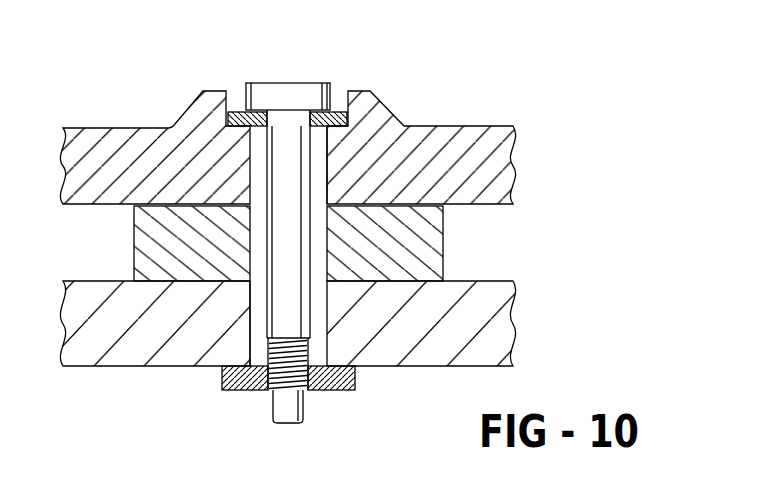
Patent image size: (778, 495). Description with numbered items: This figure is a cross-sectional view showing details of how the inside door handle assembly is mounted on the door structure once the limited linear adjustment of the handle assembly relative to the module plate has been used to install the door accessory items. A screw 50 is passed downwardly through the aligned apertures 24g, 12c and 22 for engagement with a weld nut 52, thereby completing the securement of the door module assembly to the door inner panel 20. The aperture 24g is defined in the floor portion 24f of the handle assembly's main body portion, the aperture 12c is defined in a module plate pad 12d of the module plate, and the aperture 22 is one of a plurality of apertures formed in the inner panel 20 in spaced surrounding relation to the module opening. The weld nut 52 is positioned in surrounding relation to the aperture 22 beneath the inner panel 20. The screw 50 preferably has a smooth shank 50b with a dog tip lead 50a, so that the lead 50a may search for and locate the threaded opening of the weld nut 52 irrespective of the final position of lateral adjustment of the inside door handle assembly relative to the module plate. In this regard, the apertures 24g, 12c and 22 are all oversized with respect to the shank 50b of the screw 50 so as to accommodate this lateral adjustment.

The screw 50 is at (332, 83).
The dog tip lead 50a is at (289, 404).
The shank 50b is at (278, 187).
The weld nut 52 is at (233, 390).
The floor portion 24f is at (449, 126).
The aperture 24g is at (325, 139).
The aperture 12c is at (252, 225).
The module plate pad 12d is at (443, 249).
The inner panel 20 is at (105, 366).
The aperture 22 is at (252, 300).